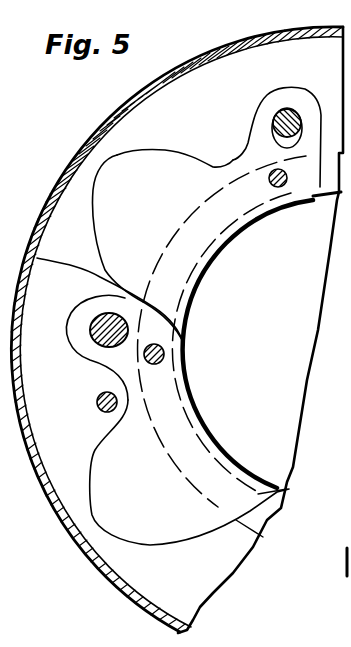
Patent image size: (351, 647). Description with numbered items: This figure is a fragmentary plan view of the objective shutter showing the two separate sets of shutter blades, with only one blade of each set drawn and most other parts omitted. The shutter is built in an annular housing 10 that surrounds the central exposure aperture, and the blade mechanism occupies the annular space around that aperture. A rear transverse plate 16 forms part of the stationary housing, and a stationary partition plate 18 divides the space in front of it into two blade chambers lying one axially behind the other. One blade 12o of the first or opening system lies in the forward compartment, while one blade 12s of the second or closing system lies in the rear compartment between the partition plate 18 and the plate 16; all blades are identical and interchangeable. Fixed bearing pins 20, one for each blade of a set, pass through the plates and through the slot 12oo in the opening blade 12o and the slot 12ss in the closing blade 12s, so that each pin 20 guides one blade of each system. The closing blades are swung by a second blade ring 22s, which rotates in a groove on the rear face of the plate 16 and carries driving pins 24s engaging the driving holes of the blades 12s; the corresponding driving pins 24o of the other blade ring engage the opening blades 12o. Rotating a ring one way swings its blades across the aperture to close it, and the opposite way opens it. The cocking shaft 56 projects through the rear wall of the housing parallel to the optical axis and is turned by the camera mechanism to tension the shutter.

The housing 10 is at (70, 530).
The transverse plate 16 is at (128, 133).
The partition plate 18 is at (118, 556).
The closing shutter blade 12s is at (168, 161).
The slot in closing blade 12ss is at (290, 110).
The slot in opening blade 12oo is at (90, 323).
The opening shutter blade 12o is at (166, 536).
The fixed bearing pin 20 is at (280, 120).
The second blade ring 22s is at (194, 445).
The driving pin of second blade ring 24s is at (281, 188).
The driving pin of first blade ring 24o is at (165, 353).
The cocking shaft 56 is at (98, 408).